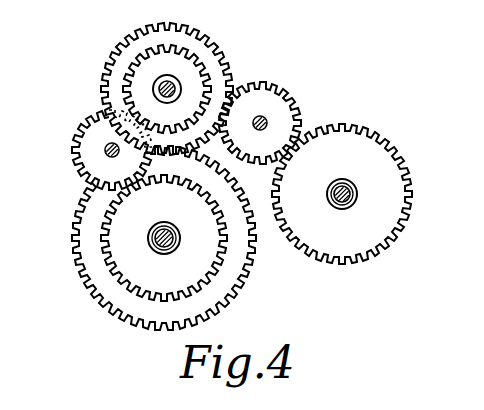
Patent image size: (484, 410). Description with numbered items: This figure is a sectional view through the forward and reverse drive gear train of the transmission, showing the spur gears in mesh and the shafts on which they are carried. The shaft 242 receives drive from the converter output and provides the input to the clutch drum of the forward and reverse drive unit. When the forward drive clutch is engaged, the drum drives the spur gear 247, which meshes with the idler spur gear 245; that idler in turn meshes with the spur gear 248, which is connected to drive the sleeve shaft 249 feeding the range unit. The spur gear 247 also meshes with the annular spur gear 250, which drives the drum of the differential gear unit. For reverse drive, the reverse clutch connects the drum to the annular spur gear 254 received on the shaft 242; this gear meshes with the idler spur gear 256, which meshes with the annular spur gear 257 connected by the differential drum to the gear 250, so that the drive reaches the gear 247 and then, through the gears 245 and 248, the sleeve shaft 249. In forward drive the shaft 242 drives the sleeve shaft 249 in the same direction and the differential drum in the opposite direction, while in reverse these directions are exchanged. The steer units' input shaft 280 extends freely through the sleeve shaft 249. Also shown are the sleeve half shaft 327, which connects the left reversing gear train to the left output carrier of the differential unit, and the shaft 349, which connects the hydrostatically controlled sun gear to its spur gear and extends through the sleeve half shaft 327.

The shaft 242 is at (158, 80).
The idler spur gear 245 is at (295, 103).
The spur gear 247 is at (230, 68).
The spur gear 248 is at (377, 135).
The sleeve shaft 249 is at (335, 181).
The annular spur gear 250 is at (95, 287).
The annular spur gear 254 is at (123, 90).
The idler spur gear 256 is at (75, 160).
The annular spur gear 257 is at (103, 218).
The steer units' input shaft 280 is at (346, 207).
The sleeve half shaft 327 is at (180, 238).
The shaft 349 is at (167, 248).